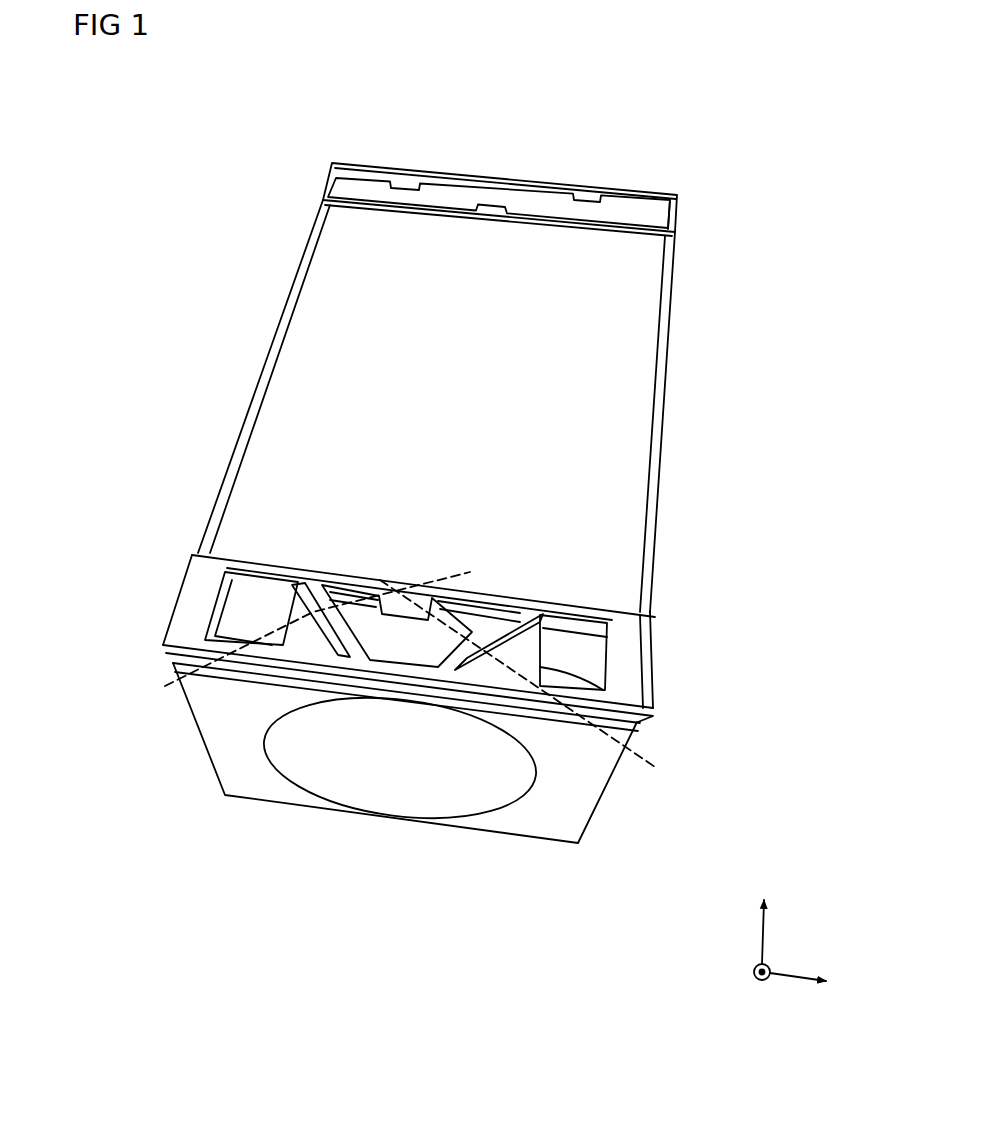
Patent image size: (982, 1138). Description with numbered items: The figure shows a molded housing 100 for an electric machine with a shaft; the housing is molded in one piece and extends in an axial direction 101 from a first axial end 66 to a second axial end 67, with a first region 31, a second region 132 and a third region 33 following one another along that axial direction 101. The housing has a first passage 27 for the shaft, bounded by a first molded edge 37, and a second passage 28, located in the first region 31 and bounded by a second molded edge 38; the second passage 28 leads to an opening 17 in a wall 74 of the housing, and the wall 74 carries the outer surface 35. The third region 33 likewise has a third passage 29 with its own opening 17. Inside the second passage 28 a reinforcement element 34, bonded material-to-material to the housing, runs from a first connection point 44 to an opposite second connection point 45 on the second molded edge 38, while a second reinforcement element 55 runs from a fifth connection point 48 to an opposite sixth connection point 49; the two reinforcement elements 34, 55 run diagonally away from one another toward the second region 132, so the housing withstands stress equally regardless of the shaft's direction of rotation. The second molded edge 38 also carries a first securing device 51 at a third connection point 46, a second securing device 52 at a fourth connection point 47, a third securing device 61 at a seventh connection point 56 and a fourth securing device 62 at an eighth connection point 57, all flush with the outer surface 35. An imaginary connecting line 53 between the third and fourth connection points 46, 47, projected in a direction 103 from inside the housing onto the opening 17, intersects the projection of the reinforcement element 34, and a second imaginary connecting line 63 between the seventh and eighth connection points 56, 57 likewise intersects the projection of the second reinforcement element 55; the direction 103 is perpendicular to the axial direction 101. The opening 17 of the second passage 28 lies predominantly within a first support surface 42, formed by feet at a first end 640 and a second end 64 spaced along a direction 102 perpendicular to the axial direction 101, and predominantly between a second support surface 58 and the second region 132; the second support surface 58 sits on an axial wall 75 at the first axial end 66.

The molded housing 100 is at (530, 130).
The second region 132 is at (222, 350).
The opening 17 is at (357, 188).
The third passage 29 is at (385, 190).
The second axial end 67 is at (322, 158).
The third region 33 is at (318, 178).
The first region 31 is at (148, 569).
The first axial end 66 is at (136, 642).
The second support surface 58 is at (282, 778).
The first passage 27 is at (380, 785).
The second connection point 45 is at (303, 585).
The outer surface 35 is at (632, 630).
The first securing device 51 is at (232, 625).
The second passage 28 is at (580, 647).
The imaginary connecting line 53 is at (170, 680).
The first end 640 is at (223, 795).
The first support surface 42 is at (233, 798).
The third connection point 46 is at (262, 655).
The reinforcement element 34 is at (318, 655).
The first connection point 44 is at (340, 655).
The fifth connection point 48 is at (424, 670).
The second reinforcement element 55 is at (478, 660).
The seventh connection point 56 is at (500, 660).
The first molded edge 37 is at (525, 700).
The axial wall 75 is at (583, 803).
The second end 64 is at (577, 858).
The second imaginary connecting line 63 is at (641, 762).
The fourth connection point 47 is at (387, 607).
The second securing device 52 is at (403, 613).
The eighth connection point 57 is at (428, 608).
The fourth securing device 62 is at (435, 605).
The sixth connection point 49 is at (520, 598).
The wall 74 is at (623, 665).
The third securing device 61 is at (645, 692).
The second molded edge 38 is at (648, 706).
The axial direction 101 is at (765, 936).
The direction 102 is at (792, 978).
The direction 103 is at (752, 972).